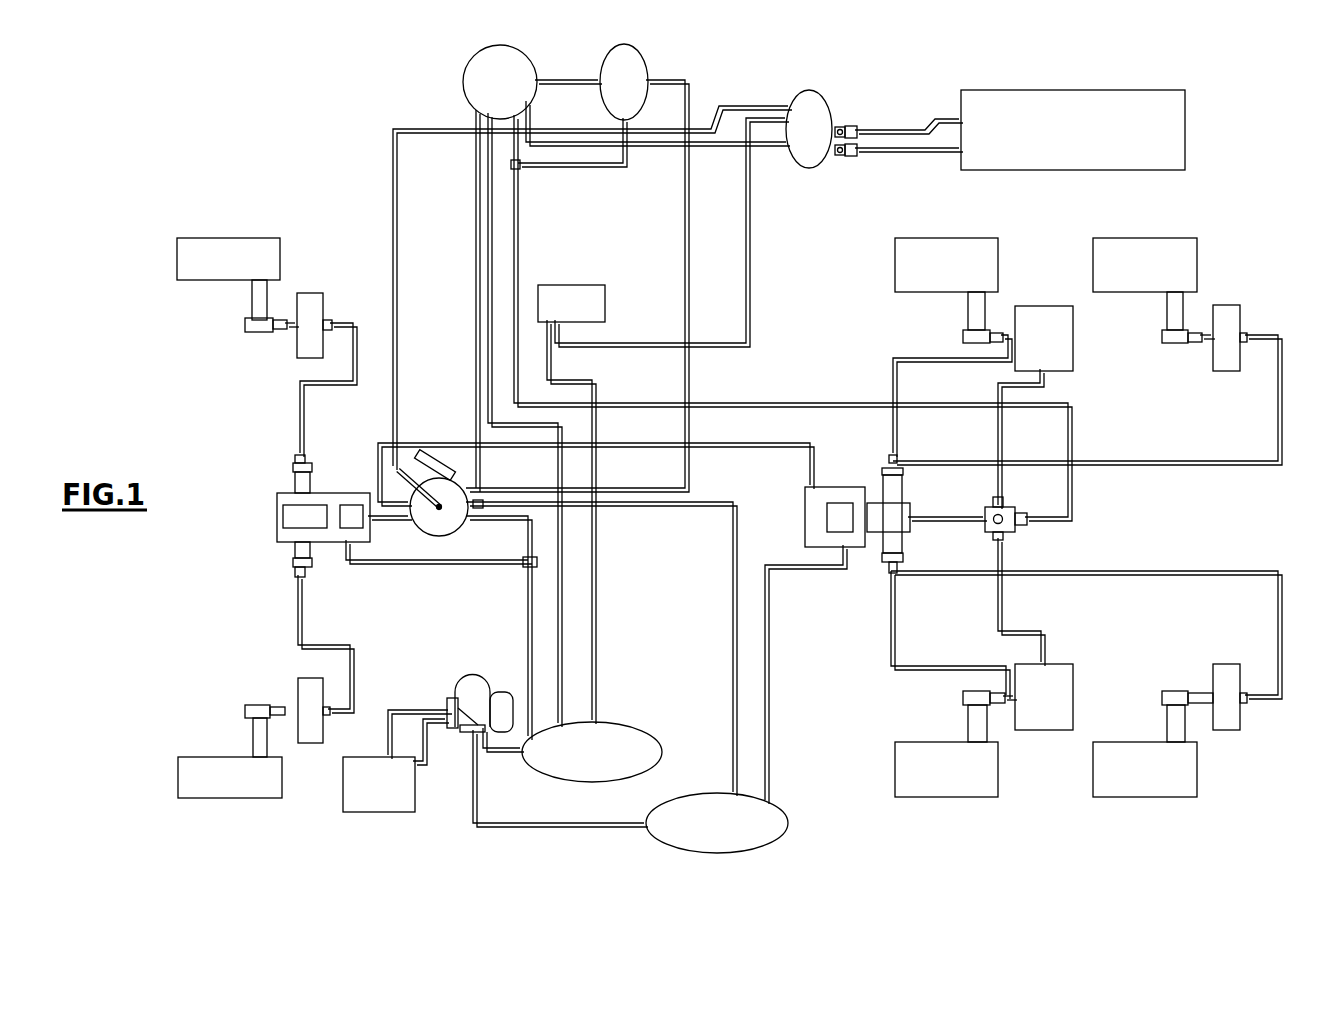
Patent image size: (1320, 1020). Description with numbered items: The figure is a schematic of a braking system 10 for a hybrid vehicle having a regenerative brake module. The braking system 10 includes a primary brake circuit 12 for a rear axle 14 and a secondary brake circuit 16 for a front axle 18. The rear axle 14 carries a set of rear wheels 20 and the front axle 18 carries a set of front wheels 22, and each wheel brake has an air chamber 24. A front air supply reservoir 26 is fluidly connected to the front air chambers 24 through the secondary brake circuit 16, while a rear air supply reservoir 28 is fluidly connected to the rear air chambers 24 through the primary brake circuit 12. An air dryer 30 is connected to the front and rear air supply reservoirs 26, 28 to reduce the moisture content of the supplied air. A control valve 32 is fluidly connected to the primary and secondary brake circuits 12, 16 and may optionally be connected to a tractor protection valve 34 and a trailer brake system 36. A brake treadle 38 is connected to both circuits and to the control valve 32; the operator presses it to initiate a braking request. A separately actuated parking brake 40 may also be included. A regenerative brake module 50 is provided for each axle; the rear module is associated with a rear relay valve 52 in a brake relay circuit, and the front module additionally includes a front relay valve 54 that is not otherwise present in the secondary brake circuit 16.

The braking system 10 is at (200, 160).
The primary brake circuit 12 is at (395, 245).
The rear axle 14 is at (1098, 822).
The secondary brake circuit 16 is at (748, 292).
The front axle 18 is at (228, 816).
The rear wheels 20 is at (1100, 255).
The front wheels 22 is at (227, 238).
The air chamber 24 is at (323, 305).
The front air supply reservoir 26 is at (550, 775).
The rear air supply reservoir 28 is at (770, 815).
The air dryer 30 is at (470, 672).
The control valve 32 is at (532, 52).
The tractor protection valve 34 is at (807, 100).
The trailer brake system 36 is at (897, 150).
The brake treadle 38 is at (440, 450).
The parking brake 40 is at (563, 285).
The regenerative brake module 50 is at (352, 505).
The rear relay valve 52 is at (895, 518).
The front relay valve 54 is at (290, 513).